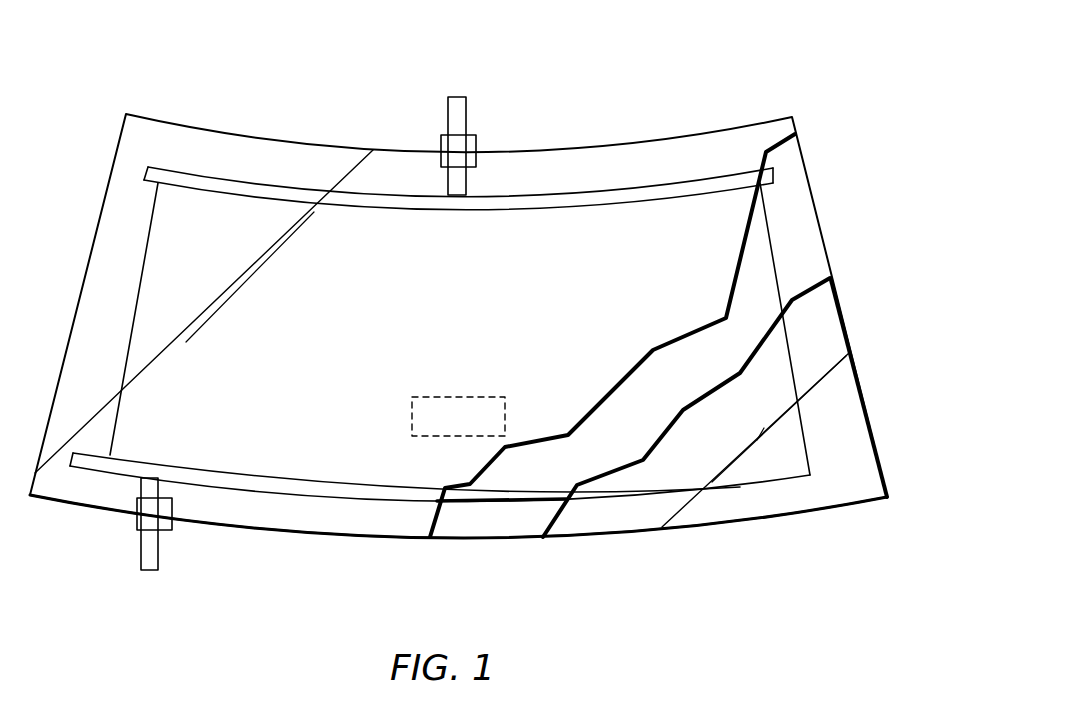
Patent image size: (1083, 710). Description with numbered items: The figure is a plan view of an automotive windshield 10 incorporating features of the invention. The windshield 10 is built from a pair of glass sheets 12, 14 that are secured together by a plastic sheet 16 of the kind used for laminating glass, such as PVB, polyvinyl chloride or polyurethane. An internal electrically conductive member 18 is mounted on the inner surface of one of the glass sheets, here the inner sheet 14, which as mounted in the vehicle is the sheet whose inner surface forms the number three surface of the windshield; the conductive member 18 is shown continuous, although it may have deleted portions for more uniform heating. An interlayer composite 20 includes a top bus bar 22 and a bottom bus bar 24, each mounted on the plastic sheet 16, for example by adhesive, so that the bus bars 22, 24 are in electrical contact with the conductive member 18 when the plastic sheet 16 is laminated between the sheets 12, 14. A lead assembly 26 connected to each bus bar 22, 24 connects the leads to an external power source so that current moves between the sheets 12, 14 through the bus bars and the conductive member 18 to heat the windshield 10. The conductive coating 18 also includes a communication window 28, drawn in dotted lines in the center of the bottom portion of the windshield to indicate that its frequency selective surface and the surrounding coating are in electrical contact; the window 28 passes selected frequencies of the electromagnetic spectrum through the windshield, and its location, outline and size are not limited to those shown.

The automotive windshield 10 is at (688, 94).
The glass sheet 12 is at (193, 243).
The glass sheet 14 is at (848, 430).
The plastic sheet 16 is at (782, 193).
The internal electrically conductive member 18 is at (778, 372).
The interlayer composite 20 is at (580, 510).
The top bus bar 22 is at (585, 197).
The bottom bus bar 24 is at (123, 478).
The lead assembly 26 is at (477, 143).
The communication window 28 is at (412, 418).